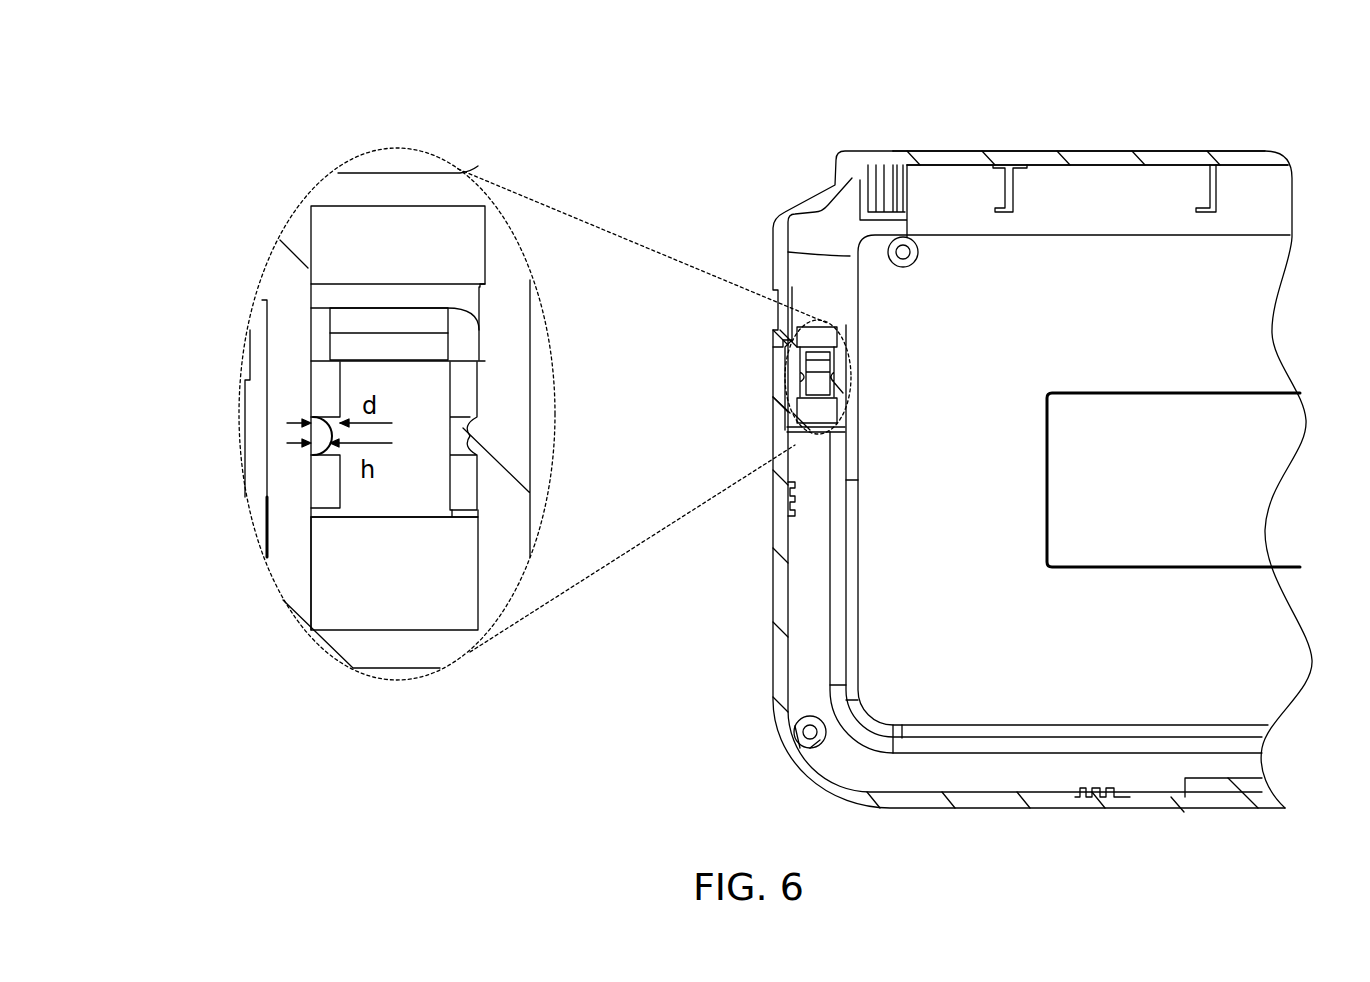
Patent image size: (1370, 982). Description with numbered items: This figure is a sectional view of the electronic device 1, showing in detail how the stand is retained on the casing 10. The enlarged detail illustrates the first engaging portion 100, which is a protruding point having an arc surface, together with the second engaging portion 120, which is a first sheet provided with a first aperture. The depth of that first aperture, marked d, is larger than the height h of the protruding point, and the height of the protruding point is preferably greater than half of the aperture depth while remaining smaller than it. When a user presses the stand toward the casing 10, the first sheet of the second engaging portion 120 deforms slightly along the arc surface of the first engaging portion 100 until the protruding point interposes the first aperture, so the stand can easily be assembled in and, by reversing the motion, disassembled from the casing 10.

The electronic device 1 is at (1160, 97).
The casing 10 is at (941, 150).
The first engaging portion 100 is at (322, 430).
The second engaging portion 120 is at (323, 375).